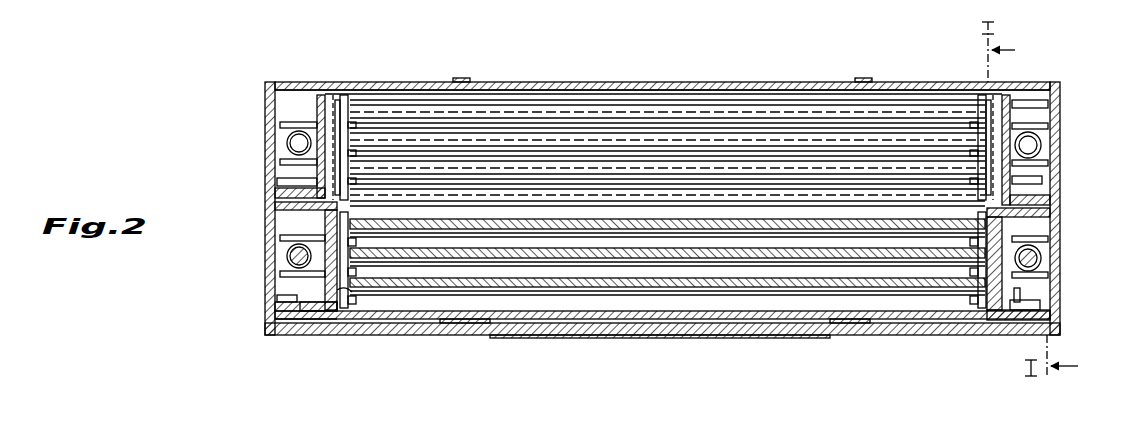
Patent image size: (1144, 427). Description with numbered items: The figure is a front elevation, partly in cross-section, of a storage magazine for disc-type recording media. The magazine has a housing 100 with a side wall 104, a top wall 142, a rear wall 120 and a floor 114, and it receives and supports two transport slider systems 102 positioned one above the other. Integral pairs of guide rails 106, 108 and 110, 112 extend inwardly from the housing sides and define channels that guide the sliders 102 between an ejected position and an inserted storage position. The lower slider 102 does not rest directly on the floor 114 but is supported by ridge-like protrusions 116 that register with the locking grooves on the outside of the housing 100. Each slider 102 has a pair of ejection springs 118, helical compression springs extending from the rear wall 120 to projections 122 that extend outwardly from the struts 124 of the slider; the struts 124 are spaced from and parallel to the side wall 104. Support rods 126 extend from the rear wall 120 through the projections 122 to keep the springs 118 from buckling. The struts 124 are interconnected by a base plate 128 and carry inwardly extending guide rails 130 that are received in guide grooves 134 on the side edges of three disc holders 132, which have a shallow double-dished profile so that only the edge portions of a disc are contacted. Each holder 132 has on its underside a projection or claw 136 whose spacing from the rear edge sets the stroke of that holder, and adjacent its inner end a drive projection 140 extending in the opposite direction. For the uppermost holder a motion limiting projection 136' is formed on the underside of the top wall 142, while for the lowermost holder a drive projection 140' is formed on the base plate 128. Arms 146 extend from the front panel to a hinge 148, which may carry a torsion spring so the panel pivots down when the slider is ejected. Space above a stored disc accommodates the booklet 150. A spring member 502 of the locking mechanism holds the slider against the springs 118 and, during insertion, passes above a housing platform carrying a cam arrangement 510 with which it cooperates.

The housing 100 is at (758, 82).
The transport slider system 102 is at (275, 85).
The side wall 104 is at (270, 112).
The guide rail 106 is at (282, 182).
The guide rail 108 is at (272, 208).
The guide rail 110 is at (282, 306).
The guide rail 112 is at (282, 334).
The floor 114 is at (914, 325).
The ridge-like protrusion 116 is at (498, 326).
The ejection spring 118 is at (282, 128).
The rear wall 120 is at (1030, 112).
The projection 122 is at (1040, 120).
The strut 124 is at (290, 144).
The support rod 126 is at (1034, 148).
The base plate 128 is at (696, 190).
The guide rail 130 is at (328, 318).
The disc holder 132 is at (650, 162).
The guide groove 134 is at (347, 292).
The projection 136 is at (994, 288).
The motion limiting projection 136' is at (666, 114).
The drive projection 140 is at (663, 116).
The drive projection 140' is at (662, 289).
The top wall 142 is at (527, 84).
The arm 146 is at (312, 108).
The hinge 148 is at (333, 92).
The booklet 150 is at (572, 150).
The spring member 502 is at (1022, 296).
The cam arrangement 510 is at (1040, 308).